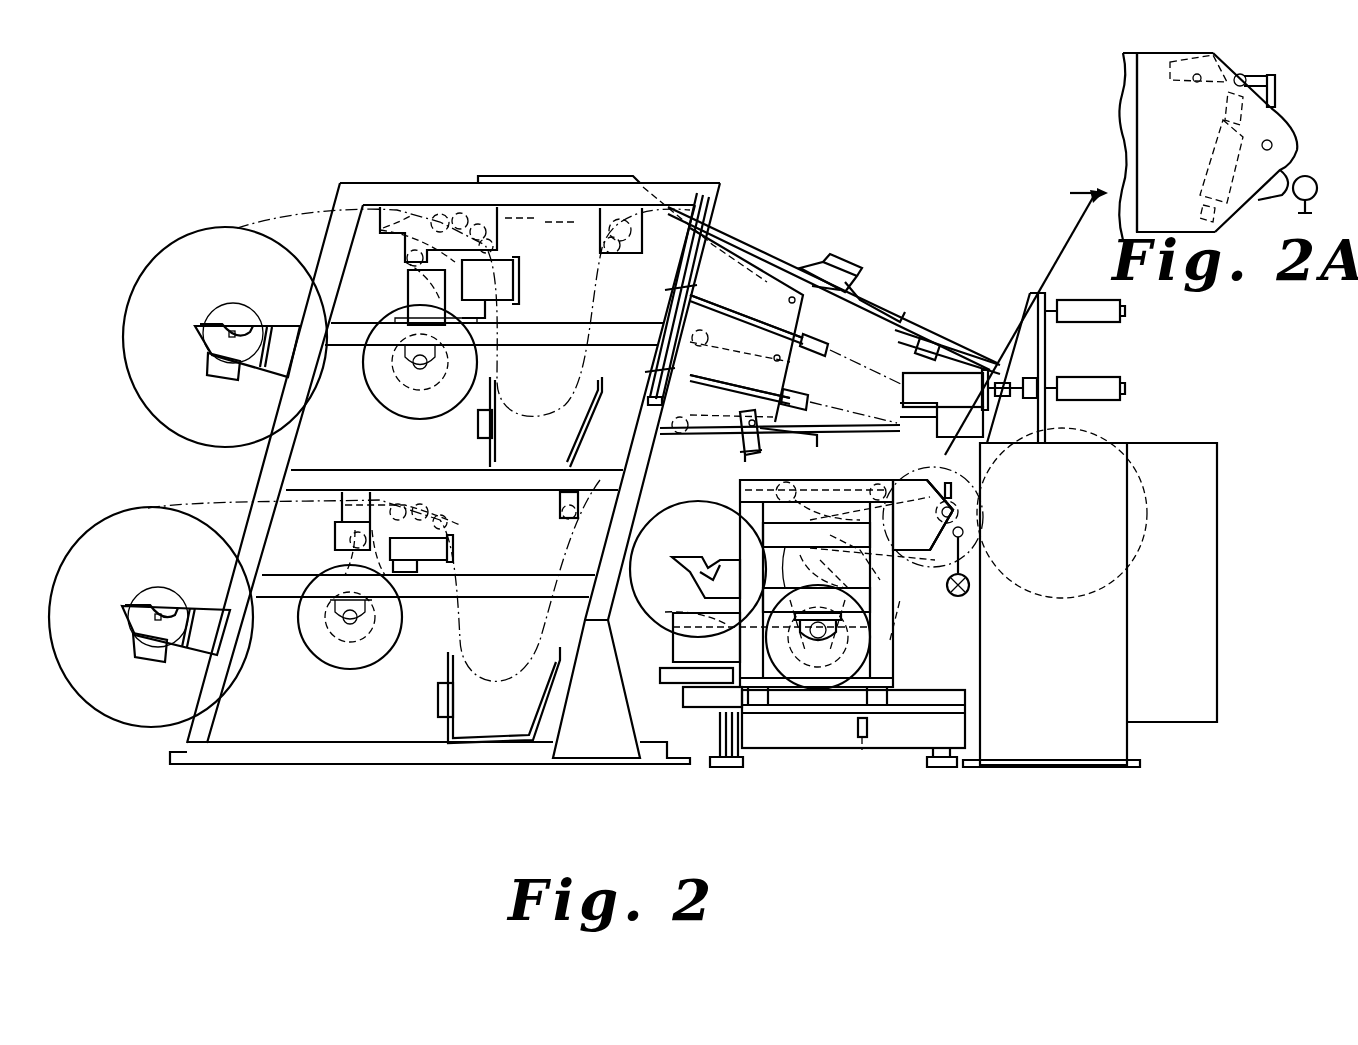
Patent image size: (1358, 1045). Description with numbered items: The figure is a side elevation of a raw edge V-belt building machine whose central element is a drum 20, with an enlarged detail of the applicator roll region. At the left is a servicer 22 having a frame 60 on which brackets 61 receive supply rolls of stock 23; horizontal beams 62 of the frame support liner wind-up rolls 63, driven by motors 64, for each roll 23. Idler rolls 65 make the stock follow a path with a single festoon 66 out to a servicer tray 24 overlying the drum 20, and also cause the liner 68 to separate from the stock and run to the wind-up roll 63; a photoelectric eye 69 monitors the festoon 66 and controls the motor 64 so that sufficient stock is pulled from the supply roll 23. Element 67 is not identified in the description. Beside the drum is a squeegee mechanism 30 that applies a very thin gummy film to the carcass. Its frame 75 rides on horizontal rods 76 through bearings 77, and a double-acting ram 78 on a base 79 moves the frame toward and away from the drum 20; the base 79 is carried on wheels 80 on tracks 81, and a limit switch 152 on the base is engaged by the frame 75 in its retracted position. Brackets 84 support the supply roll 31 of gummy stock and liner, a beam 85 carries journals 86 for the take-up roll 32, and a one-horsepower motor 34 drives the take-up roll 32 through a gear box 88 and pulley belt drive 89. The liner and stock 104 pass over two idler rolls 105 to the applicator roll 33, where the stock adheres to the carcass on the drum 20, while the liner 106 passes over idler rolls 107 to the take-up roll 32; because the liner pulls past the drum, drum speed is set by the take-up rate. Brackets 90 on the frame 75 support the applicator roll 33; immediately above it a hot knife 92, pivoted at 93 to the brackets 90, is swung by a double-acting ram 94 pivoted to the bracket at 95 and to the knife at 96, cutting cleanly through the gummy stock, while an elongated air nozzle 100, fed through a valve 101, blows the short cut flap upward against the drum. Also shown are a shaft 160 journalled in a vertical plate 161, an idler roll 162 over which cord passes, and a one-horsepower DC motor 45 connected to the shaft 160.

In FIG. 2, the drum 20 is at (1147, 497).
In FIG. 2, the servicer 22 is at (405, 90).
In FIG. 2, the supply rolls of stock 23 is at (147, 307).
In FIG. 2, the servicer tray 24 is at (915, 290).
In FIG. 2, the squeegee mechanism 30 is at (940, 610).
In FIG. 2A, the squeegee mechanism 30 is at (1153, 25).
In FIG. 2, the supply roll 31 is at (672, 520).
In FIG. 2, the take-up roll 32 is at (860, 648).
In FIG. 2, the applicator roll 33 is at (955, 510).
In FIG. 2A, the applicator roll 33 is at (1295, 135).
In FIG. 2, the motor 34 is at (715, 612).
In FIG. 2, the DC motor 45 is at (944, 403).
In FIG. 2, the frame 60 is at (428, 192).
In FIG. 2, the brackets 61 is at (280, 362).
In FIG. 2, the horizontal beams 62 is at (538, 337).
In FIG. 2, the liner wind-up rolls 63 is at (383, 406).
In FIG. 2, the motors 64 is at (407, 287).
In FIG. 2, the idler rolls 65 is at (522, 222).
In FIG. 2, the festoon 66 is at (536, 418).
In FIG. 2, the arm 67 is at (818, 380).
In FIG. 2, the liner 68 is at (400, 240).
In FIG. 2, the photoelectric eye 69 is at (478, 432).
In FIG. 2, the frame 75 is at (835, 480).
In FIG. 2A, the frame 75 is at (1135, 100).
In FIG. 2, the horizontal rods 76 is at (930, 690).
In FIG. 2, the bearings 77 is at (765, 705).
In FIG. 2, the ram 78 is at (690, 675).
In FIG. 2, the base 79 is at (718, 700).
In FIG. 2, the wheels 80 is at (718, 745).
In FIG. 2, the tracks 81 is at (730, 765).
In FIG. 2, the brackets 84 is at (730, 555).
In FIG. 2, the beam 85 is at (840, 590).
In FIG. 2, the journals 86 is at (842, 628).
In FIG. 2, the gear box 88 is at (805, 690).
In FIG. 2, the pulley belt drive 89 is at (812, 655).
In FIG. 2, the brackets 90 is at (912, 485).
In FIG. 2A, the brackets 90 is at (1160, 136).
In FIG. 2, the hot knife 92 is at (952, 490).
In FIG. 2A, the hot knife 92 is at (1283, 100).
In FIG. 2A, the pivot 93 is at (1203, 72).
In FIG. 2A, the double-acting ram 94 is at (1210, 148).
In FIG. 2A, the pivot 95 is at (1203, 213).
In FIG. 2A, the pivot 96 is at (1247, 75).
In FIG. 2, the air nozzle 100 is at (964, 532).
In FIG. 2A, the air nozzle 100 is at (1326, 168).
In FIG. 2, the valve 101 is at (968, 590).
In FIG. 2, the liner and stock 104 is at (748, 473).
In FIG. 2, the idler rolls 105 is at (800, 505).
In FIG. 2, the liner 106 is at (900, 575).
In FIG. 2, the idler rolls 107 is at (828, 537).
In FIG. 2, the limit switch 152 is at (862, 745).
In FIG. 2, the shaft 160 is at (1127, 388).
In FIG. 2, the vertical plate 161 is at (1048, 345).
In FIG. 2, the idler roll 162 is at (1093, 323).